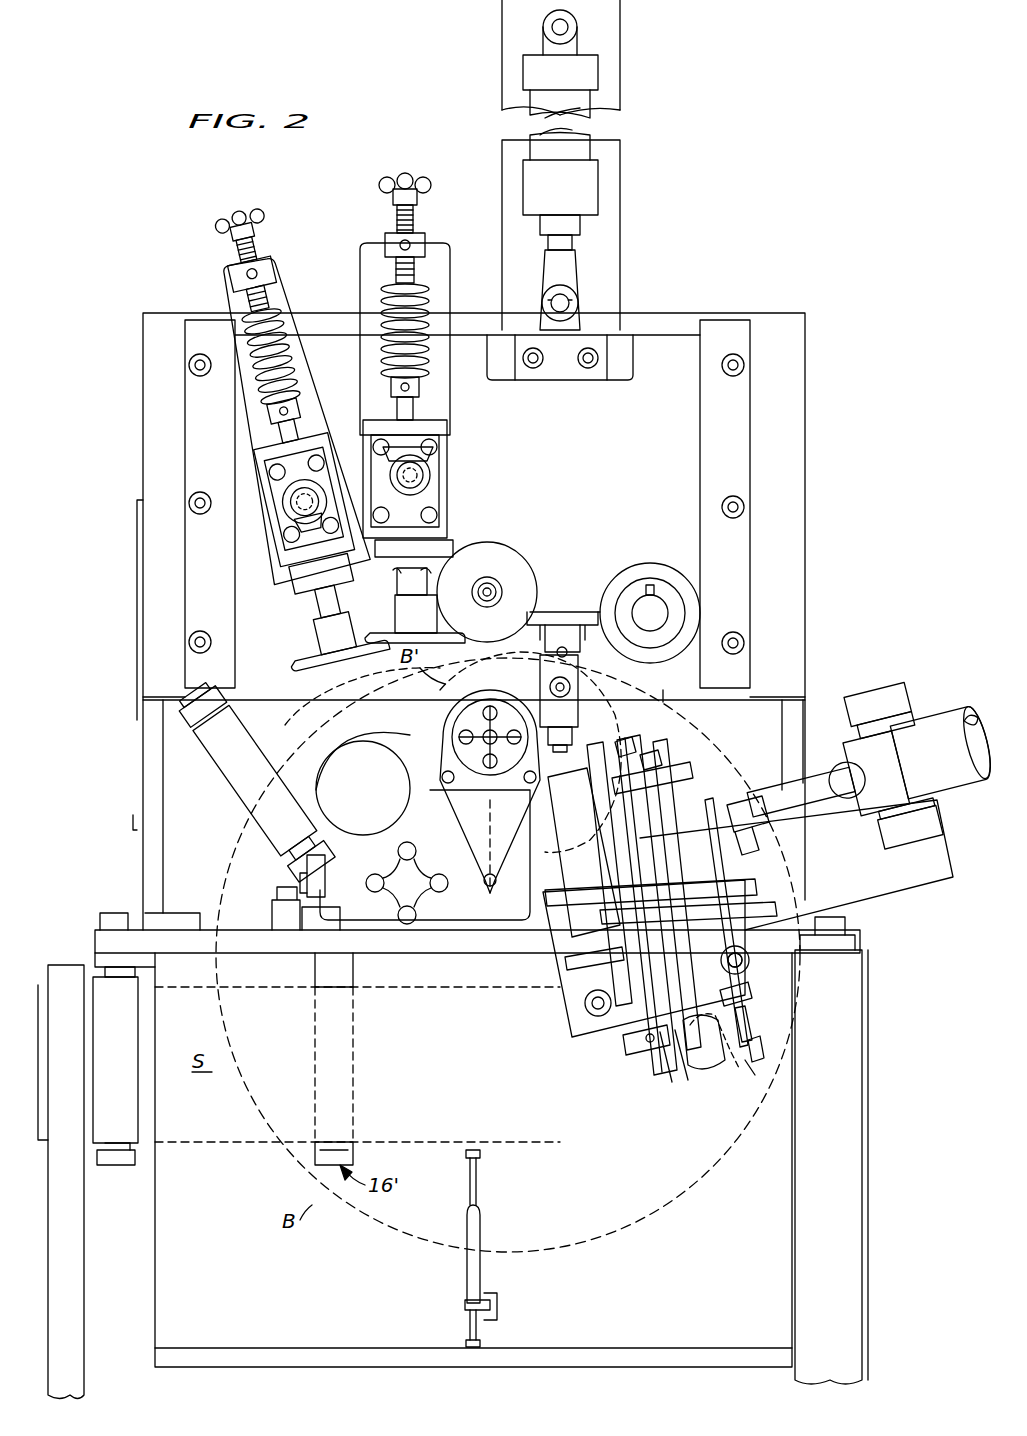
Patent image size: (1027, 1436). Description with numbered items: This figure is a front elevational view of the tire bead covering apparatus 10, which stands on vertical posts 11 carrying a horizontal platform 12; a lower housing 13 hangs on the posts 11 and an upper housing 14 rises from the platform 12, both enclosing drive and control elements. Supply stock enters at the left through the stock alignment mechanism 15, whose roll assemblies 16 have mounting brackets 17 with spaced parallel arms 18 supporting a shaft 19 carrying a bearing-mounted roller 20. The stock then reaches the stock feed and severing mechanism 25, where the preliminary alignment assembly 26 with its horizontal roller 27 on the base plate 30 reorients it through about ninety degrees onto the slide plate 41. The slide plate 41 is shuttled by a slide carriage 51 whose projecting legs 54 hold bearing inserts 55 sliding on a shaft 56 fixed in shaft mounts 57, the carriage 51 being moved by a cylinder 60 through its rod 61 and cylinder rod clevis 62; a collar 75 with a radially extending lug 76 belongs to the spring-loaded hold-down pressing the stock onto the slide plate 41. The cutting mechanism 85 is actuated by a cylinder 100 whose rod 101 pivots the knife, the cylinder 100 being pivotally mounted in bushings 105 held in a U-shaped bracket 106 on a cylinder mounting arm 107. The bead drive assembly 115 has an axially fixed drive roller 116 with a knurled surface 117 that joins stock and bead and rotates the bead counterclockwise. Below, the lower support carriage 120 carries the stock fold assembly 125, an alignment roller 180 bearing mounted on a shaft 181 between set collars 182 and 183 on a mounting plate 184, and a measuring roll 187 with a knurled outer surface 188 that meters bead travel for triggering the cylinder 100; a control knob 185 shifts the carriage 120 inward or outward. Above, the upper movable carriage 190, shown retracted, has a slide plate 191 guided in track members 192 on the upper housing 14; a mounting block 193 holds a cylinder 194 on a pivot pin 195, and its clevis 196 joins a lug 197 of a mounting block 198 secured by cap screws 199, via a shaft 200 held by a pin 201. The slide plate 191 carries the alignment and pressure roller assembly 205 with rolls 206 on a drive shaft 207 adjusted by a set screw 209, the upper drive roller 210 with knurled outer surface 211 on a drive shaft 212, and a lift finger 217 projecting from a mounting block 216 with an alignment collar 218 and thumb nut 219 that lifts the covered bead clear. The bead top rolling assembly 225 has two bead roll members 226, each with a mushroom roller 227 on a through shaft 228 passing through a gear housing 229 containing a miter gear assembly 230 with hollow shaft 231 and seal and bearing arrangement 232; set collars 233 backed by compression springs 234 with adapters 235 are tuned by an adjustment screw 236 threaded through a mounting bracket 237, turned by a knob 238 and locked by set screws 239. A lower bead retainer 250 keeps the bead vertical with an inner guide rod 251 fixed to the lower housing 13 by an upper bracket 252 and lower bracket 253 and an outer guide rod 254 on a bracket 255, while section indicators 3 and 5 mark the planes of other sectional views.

The bead covering apparatus 10 is at (775, 187).
The vertical posts 11 is at (858, 990).
The horizontal platform 12 is at (835, 948).
The lower housing 13 is at (775, 1148).
The upper housing 14 is at (800, 715).
The stock alignment mechanism 15 is at (252, 1152).
The roll assembly 16 is at (112, 1166).
The mounting brackets 17 is at (118, 960).
The spaced parallel arms 18 is at (135, 968).
The shaft 19 is at (138, 1152).
The roller 20 is at (130, 1105).
The stock feed and severing mechanism 25 is at (676, 1085).
The preliminary alignment assembly 26 is at (765, 1060).
The roller 27 is at (720, 1058).
The base plate 30 is at (680, 1085).
The slide plate 41 is at (740, 1002).
The slide carriage 51 is at (740, 1055).
The projecting legs 54 is at (660, 908).
The bearing inserts 55 is at (660, 885).
The shaft 56 is at (715, 1018).
The shaft mounts 57 is at (665, 780).
The cylinder 60 is at (603, 872).
The rod 61 is at (590, 1005).
The cylinder rod clevis 62 is at (650, 1055).
The collar 75 is at (748, 950).
The radially extending lug 76 is at (728, 985).
The cutting mechanism 85 is at (908, 680).
The cylinder 100 is at (950, 766).
The rod 101 is at (790, 820).
The bushings 105 is at (912, 715).
The U-shaped bracket 106 is at (878, 696).
The cylinder mounting arm 107 is at (742, 810).
The bead drive assembly 115 is at (660, 718).
The drive roller 116 is at (598, 750).
The knurled surface 117 is at (652, 760).
The lower support carriage 120 is at (295, 882).
The stock fold assembly 125 is at (440, 725).
The alignment roller 180 is at (285, 728).
The shaft 181 is at (282, 840).
The set collar 182 is at (195, 712).
The set collar 183 is at (305, 858).
The mounting plate 184 is at (330, 878).
The control knob 185 is at (388, 892).
The measuring roll 187 is at (350, 760).
The knurled outer surface 188 is at (345, 760).
The upper movable carriage 190 is at (813, 302).
The slide plate 191 is at (650, 448).
The track members 192 is at (195, 405).
The mounting block 193 is at (608, 33).
The cylinder 194 is at (590, 100).
The pivot pin 195 is at (548, 30).
The clevis 196 is at (578, 300).
The lug 197 is at (570, 322).
The mounting block 198 is at (623, 358).
The cap screws 199 is at (545, 368).
The shaft 200 is at (565, 300).
The pin 201 is at (585, 310).
The alignment and pressure roller assembly 205 is at (624, 565).
The rolls 206 is at (668, 590).
The drive shaft 207 is at (660, 613).
The set screw 209 is at (648, 582).
The upper drive roller 210 is at (525, 575).
The knurled outer surface 211 is at (500, 545).
The drive shaft 212 is at (500, 592).
The mounting block 216 is at (583, 618).
The lift finger 217 is at (578, 678).
The alignment collar 218 is at (572, 688).
The thumb nut 219 is at (548, 790).
The bead top rolling assembly 225 is at (346, 222).
The bead roll members 226 is at (220, 305).
The mushroom roller 227 is at (330, 638).
The through shaft 228 is at (418, 590).
The gear housing 229 is at (290, 530).
The miter gear assembly 230 is at (296, 558).
The hollow shaft 231 is at (290, 502).
The seal and bearing arrangement 232 is at (258, 452).
The set collars 233 is at (435, 398).
The compression springs 234 is at (255, 352).
The adapters 235 is at (245, 312).
The adjustment screw 236 is at (250, 240).
The mounting bracket 237 is at (258, 300).
The knob 238 is at (248, 227).
The set screws 239 is at (262, 270).
The lower bead retainer 250 is at (458, 1290).
The inner guide rod 251 is at (480, 1195).
The upper bracket 252 is at (485, 1155).
The lower bracket 253 is at (482, 1340).
The outer guide rod 254 is at (480, 1240).
The bracket 255 is at (492, 1300).
The section line 3 is at (488, 660).
The section line 5 is at (698, 752).